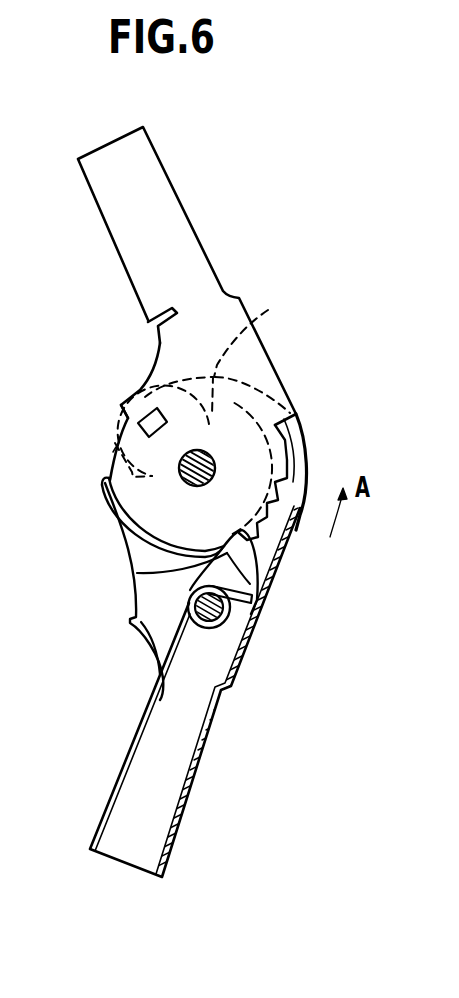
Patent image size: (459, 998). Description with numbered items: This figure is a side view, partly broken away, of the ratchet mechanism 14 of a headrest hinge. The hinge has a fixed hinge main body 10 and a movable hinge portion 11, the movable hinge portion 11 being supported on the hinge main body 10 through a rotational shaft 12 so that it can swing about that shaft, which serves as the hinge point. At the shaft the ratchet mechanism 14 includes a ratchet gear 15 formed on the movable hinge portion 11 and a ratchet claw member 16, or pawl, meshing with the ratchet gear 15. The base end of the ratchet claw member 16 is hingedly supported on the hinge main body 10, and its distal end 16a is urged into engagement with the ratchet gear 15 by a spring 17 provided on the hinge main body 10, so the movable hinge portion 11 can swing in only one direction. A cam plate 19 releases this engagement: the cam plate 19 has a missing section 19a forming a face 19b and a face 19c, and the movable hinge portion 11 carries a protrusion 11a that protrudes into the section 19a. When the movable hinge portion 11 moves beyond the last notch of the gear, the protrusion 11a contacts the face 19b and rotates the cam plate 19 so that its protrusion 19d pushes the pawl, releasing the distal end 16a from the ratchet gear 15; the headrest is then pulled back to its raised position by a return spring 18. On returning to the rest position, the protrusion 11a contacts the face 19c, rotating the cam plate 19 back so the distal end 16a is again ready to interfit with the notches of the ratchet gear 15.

The hinge main body 10 is at (203, 762).
The movable hinge portion 11 is at (206, 257).
The protrusion 11a is at (152, 427).
The rotational shaft 12 is at (212, 453).
The ratchet mechanism 14 is at (323, 425).
The ratchet gear 15 is at (290, 462).
The ratchet claw member 16 is at (232, 619).
The distal end of ratchet claw member 16a is at (262, 561).
The spring 17 is at (158, 645).
The return spring 18 is at (147, 323).
The cam plate 19 is at (103, 486).
The missing section 19a is at (116, 441).
The face 19b is at (113, 452).
The face 19c is at (260, 332).
The protrusion 19d is at (137, 573).